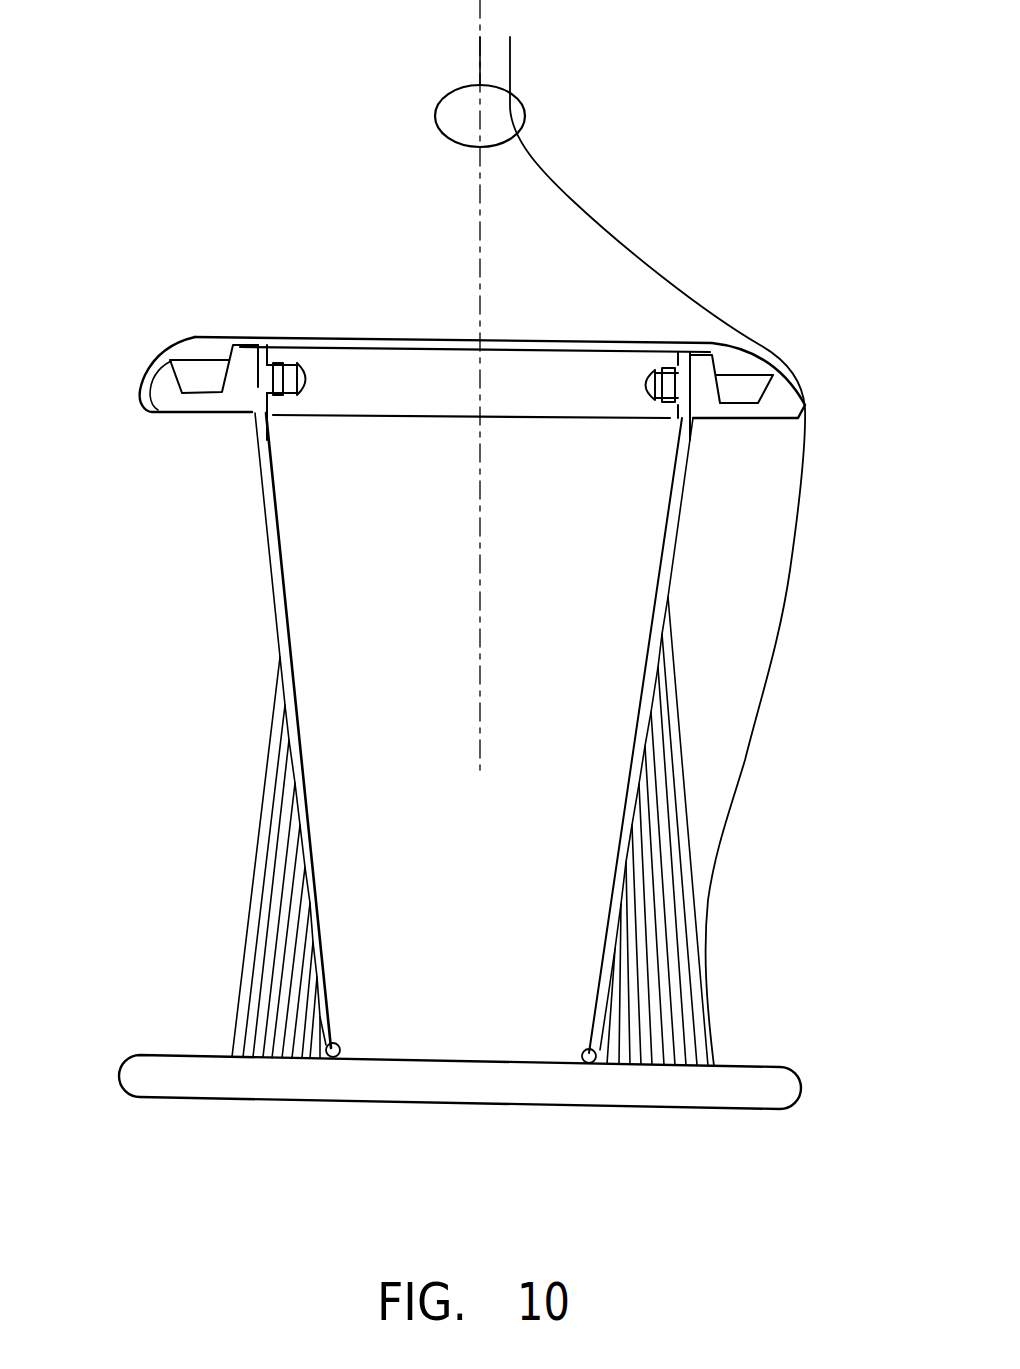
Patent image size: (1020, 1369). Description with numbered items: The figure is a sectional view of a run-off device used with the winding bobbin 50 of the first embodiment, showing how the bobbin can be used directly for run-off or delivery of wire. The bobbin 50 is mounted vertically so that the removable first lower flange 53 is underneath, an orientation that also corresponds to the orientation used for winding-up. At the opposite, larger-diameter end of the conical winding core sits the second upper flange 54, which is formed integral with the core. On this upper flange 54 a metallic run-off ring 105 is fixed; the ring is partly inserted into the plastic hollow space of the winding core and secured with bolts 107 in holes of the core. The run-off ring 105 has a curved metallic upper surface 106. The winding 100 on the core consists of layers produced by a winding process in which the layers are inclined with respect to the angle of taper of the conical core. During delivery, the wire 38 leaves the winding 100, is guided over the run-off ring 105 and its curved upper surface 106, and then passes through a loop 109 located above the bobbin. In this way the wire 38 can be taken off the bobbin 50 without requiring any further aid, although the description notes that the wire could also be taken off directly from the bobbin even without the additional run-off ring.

The loop 109 is at (449, 90).
The wire 38 is at (765, 708).
The run-off ring 105 is at (148, 360).
The curved metallic upper surface 106 is at (207, 336).
The bolts 107 is at (648, 373).
The second upper flange 54 is at (773, 398).
The winding bobbin 50 is at (680, 517).
The winding 100 is at (270, 968).
The removable first lower flange 53 is at (790, 1071).